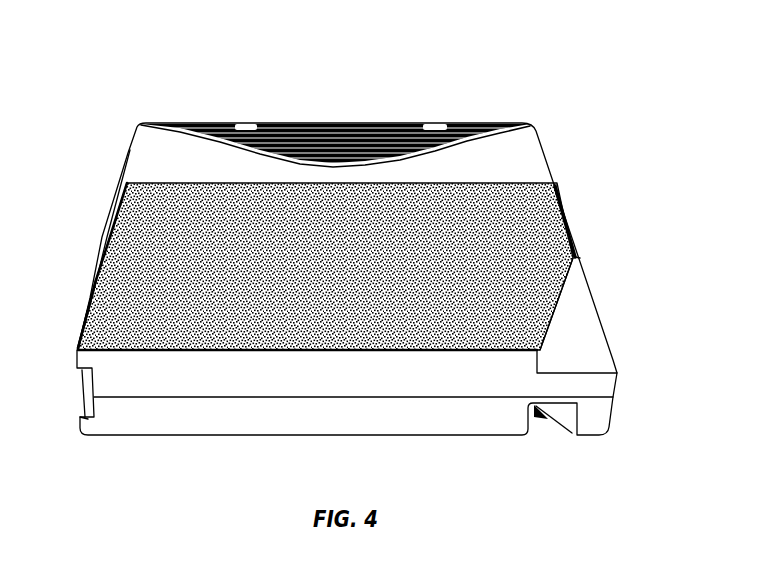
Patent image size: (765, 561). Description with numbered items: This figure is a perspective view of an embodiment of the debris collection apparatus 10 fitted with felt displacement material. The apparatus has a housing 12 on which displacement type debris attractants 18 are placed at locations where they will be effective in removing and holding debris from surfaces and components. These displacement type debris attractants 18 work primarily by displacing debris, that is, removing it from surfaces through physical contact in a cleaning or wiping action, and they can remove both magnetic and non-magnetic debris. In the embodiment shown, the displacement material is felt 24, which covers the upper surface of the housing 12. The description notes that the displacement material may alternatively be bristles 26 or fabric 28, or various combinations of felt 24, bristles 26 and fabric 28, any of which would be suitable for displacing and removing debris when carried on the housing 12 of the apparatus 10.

The debris collection apparatus 10 is at (108, 68).
The housing 12 is at (139, 438).
The displacement type debris attractants 18 is at (86, 278).
The felt 24 is at (553, 314).
The bristles 26 is at (566, 208).
The fabric 28 is at (116, 203).